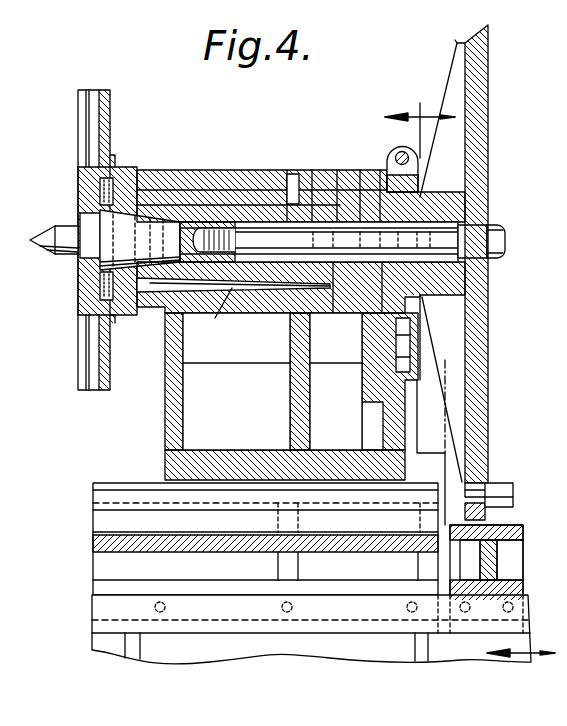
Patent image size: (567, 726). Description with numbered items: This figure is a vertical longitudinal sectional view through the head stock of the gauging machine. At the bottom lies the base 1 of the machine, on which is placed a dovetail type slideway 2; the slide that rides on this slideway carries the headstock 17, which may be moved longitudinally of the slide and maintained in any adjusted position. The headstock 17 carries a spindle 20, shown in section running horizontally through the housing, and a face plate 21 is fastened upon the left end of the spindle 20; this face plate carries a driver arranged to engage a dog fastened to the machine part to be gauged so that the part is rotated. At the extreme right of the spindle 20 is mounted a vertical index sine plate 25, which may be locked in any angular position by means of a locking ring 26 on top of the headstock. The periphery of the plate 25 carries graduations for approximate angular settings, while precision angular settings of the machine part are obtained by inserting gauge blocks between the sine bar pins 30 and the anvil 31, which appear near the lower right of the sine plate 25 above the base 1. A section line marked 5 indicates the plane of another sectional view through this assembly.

The base 1 is at (92, 634).
The slideway 2 is at (93, 522).
The section line 5- 5 is at (470, 387).
The headstock 17 is at (257, 146).
The spindle 20 is at (173, 172).
The face plate 21 is at (112, 101).
The vertical index sine plate 25 is at (490, 100).
The locking ring 26 is at (388, 168).
The sine bar pins 30 is at (497, 486).
The anvil 31 is at (513, 561).